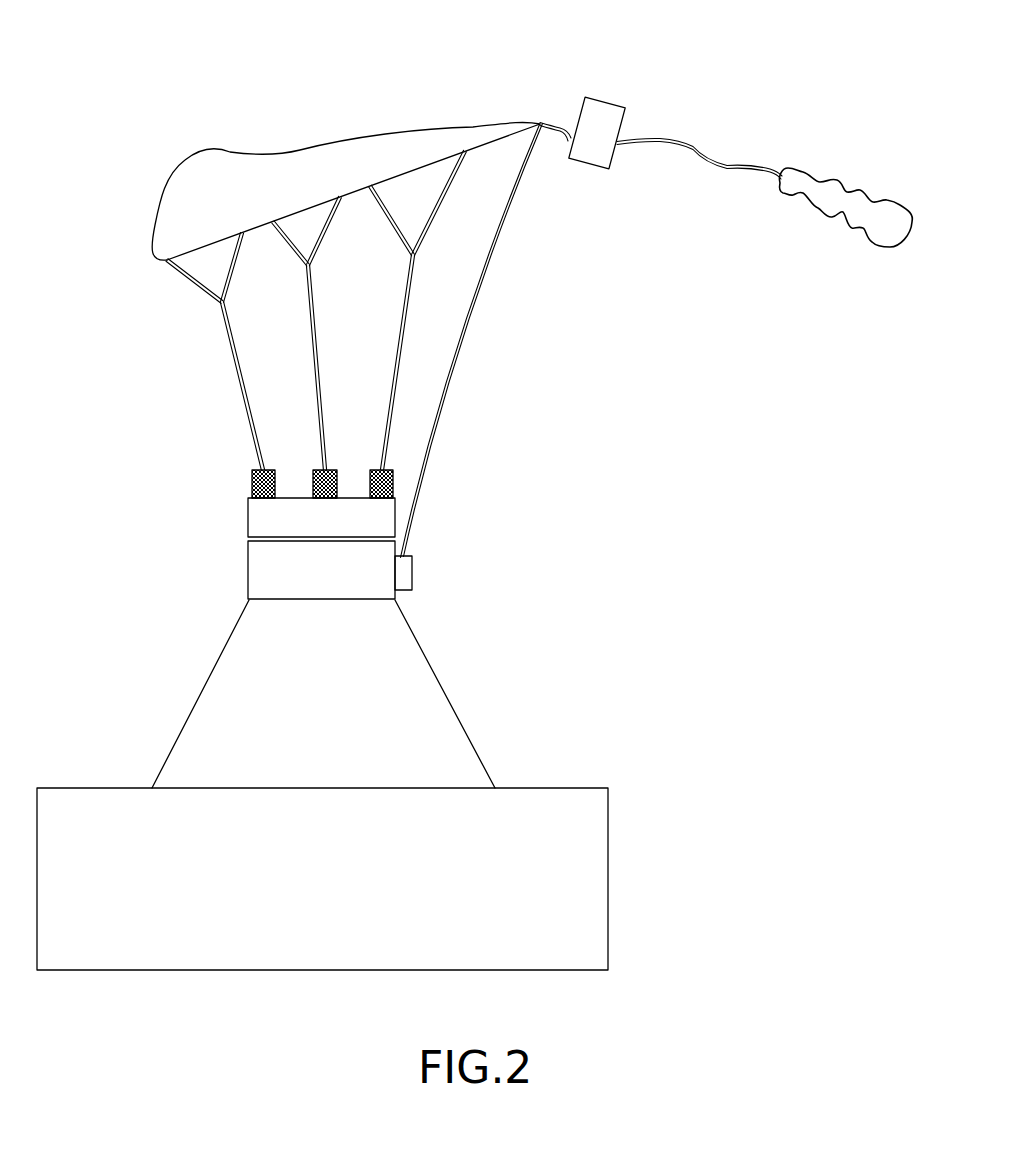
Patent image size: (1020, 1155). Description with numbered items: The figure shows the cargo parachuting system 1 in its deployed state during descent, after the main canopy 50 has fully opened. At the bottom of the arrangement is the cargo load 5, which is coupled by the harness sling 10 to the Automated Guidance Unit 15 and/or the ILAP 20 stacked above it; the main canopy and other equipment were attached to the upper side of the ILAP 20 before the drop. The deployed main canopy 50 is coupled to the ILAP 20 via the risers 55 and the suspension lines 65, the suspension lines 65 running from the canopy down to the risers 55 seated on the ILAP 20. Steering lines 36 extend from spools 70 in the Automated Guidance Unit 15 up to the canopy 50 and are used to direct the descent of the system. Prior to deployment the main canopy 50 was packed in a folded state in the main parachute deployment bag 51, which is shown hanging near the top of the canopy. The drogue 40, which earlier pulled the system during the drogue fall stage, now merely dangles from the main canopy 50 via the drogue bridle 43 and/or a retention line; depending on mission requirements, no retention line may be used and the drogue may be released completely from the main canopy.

The cargo parachuting system 1 is at (258, 103).
The cargo load 5 is at (592, 830).
The harness sling 10 is at (175, 690).
The Automated Guidance Unit 15 is at (250, 568).
The ILAP 20 is at (395, 527).
The steering lines 36 is at (458, 351).
The drogue 40 is at (782, 226).
The drogue bridle 43 is at (660, 140).
The main canopy 50 is at (126, 218).
The main parachute deployment bag 51 is at (600, 98).
The risers 55 is at (277, 472).
The suspension lines 65 is at (398, 345).
The spools 70 is at (413, 573).